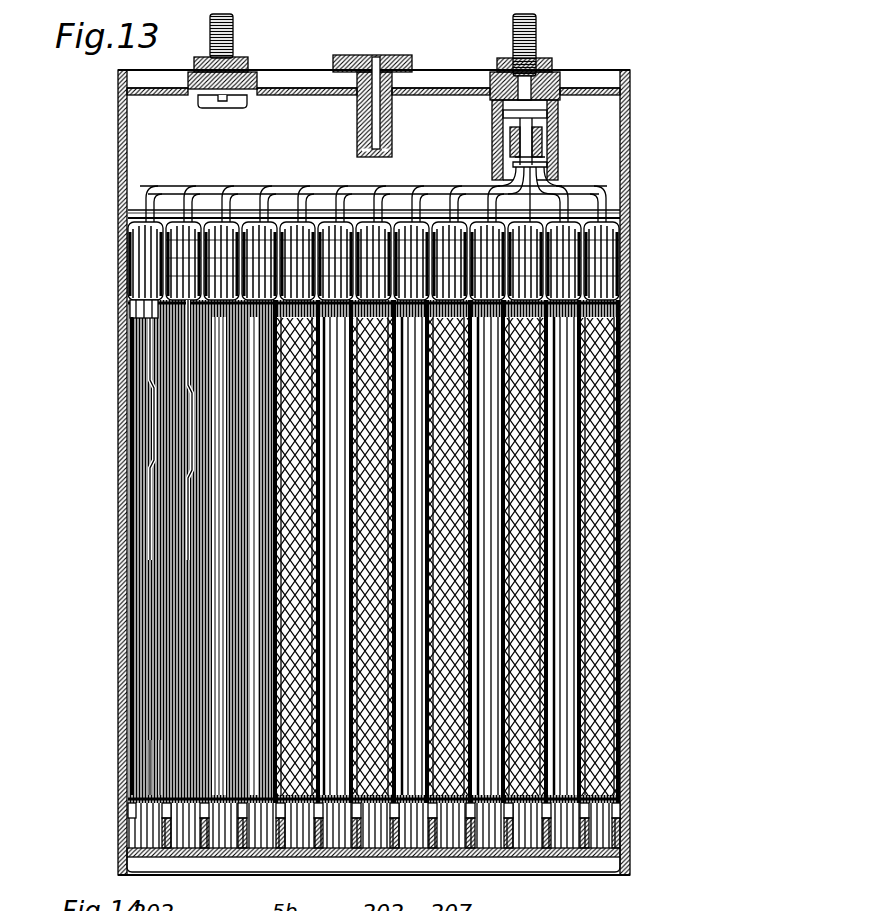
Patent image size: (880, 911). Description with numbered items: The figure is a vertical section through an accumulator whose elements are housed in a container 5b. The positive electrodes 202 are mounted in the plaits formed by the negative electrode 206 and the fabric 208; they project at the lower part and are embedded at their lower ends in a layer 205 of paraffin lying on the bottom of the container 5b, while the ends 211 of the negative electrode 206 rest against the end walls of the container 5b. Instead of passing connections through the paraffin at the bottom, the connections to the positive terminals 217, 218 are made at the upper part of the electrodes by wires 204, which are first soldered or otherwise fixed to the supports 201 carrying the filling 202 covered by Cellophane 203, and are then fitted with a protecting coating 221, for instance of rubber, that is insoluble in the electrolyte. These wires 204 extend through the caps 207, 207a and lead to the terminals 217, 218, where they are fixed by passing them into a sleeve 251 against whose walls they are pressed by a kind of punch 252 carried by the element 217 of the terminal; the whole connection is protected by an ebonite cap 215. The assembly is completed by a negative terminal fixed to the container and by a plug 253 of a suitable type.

The container 5b is at (122, 132).
The plug 253 is at (392, 42).
The terminal element 217 is at (513, 36).
The terminal 218 is at (547, 60).
The punch 252 is at (562, 123).
The ebonite cap 215 is at (523, 133).
The sleeve 251 is at (548, 172).
The protecting coating 221 is at (283, 190).
The cap 207 is at (130, 246).
The cap 207a is at (120, 306).
The wires 204 is at (150, 290).
The supports 201 is at (165, 501).
The positive electrodes 202 is at (130, 535).
The Cellophane 203 is at (160, 732).
The fabric 208 is at (160, 632).
The ends of negative electrode 211 is at (135, 682).
The negative electrode 206 is at (160, 775).
The layer of paraffin 205 is at (145, 832).